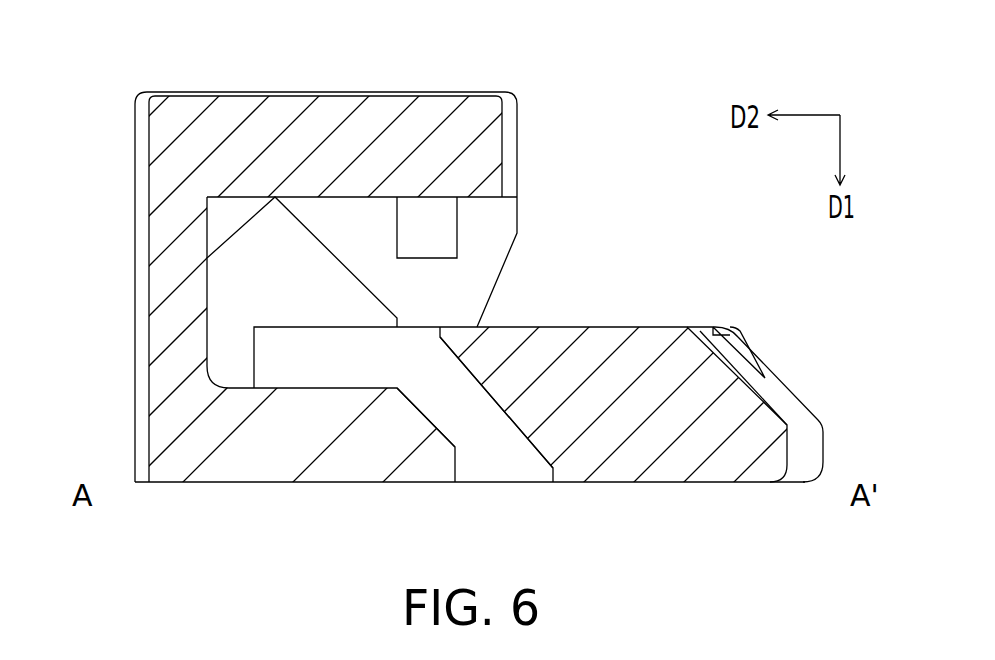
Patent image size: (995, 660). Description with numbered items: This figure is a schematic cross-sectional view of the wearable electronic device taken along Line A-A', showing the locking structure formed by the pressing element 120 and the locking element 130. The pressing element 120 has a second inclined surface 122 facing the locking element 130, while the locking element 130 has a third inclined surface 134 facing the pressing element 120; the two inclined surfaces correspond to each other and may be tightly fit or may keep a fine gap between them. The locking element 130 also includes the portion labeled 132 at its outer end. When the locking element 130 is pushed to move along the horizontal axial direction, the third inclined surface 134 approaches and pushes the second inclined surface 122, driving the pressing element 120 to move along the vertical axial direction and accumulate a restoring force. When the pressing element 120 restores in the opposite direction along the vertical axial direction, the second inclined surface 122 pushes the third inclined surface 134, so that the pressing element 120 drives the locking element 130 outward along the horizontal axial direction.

The pressing element 120 is at (100, 60).
The second inclined surface 122 is at (450, 421).
The locking element 130 is at (717, 288).
The engaging tongue 132 is at (778, 378).
The third inclined surface 134 is at (522, 452).